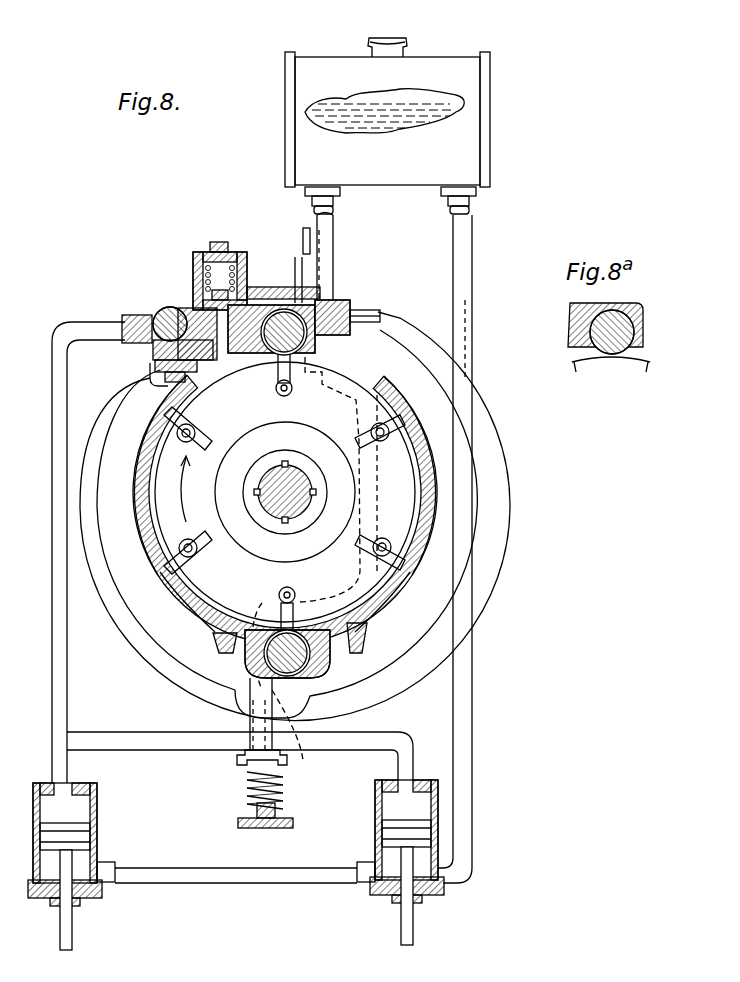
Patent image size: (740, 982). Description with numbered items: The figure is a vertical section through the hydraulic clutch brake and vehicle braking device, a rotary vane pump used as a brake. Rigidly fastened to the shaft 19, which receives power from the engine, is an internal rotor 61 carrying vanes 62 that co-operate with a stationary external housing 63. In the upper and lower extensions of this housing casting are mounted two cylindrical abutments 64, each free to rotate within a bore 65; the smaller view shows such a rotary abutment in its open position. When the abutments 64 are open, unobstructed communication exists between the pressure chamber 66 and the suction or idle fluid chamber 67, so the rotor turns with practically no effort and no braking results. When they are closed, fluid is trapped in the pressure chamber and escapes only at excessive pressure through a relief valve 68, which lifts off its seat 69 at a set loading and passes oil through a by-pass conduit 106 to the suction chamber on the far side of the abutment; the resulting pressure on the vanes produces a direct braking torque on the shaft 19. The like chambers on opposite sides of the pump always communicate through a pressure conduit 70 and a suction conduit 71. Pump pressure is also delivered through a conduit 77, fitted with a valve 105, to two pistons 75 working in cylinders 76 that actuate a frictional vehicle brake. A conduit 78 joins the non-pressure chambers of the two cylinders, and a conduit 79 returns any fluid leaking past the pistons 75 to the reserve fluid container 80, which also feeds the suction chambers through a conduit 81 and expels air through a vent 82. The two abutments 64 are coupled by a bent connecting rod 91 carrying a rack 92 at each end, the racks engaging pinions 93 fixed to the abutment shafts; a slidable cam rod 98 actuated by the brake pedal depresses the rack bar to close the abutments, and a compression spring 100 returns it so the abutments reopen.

In FIG. 8, the shaft 19 is at (322, 448).
In FIG. 8, the internal rotor 61 is at (313, 492).
In FIG. 8, the vanes 62 is at (392, 420).
In FIG. 8, the external housing 63 is at (370, 370).
In FIG. 8, the abutments 64 is at (315, 318).
In FIG. 8A, the abutments 64 is at (625, 318).
In FIG. 8, the bores 65 is at (262, 320).
In FIG. 8, the pressure chamber 66 is at (360, 640).
In FIG. 8, the suction chamber 67 is at (340, 360).
In FIG. 8, the relief valve 68 is at (198, 285).
In FIG. 8, the seat 69 is at (190, 320).
In FIG. 8, the pressure conduit 70 is at (125, 555).
In FIG. 8, the suction conduit 71 is at (512, 490).
In FIG. 8, the pistons 75 is at (40, 832).
In FIG. 8, the cylinders 76 is at (150, 722).
In FIG. 8, the conduit 77 is at (52, 634).
In FIG. 8, the conduit 78 is at (200, 855).
In FIG. 8, the conduit 79 is at (472, 650).
In FIG. 8, the reserve fluid container 80 is at (387, 133).
In FIG. 8, the conduit 81 is at (328, 258).
In FIG. 8, the vent 82 is at (390, 34).
In FIG. 8, the connecting rod 91 is at (292, 262).
In FIG. 8, the rack 92 is at (291, 581).
In FIG. 8, the pinions 93 is at (272, 375).
In FIG. 8, the cam rod 98 is at (304, 230).
In FIG. 8, the compression spring 100 is at (247, 788).
In FIG. 8, the valve 105 is at (145, 314).
In FIG. 8, the by-pass conduit 106 is at (285, 290).